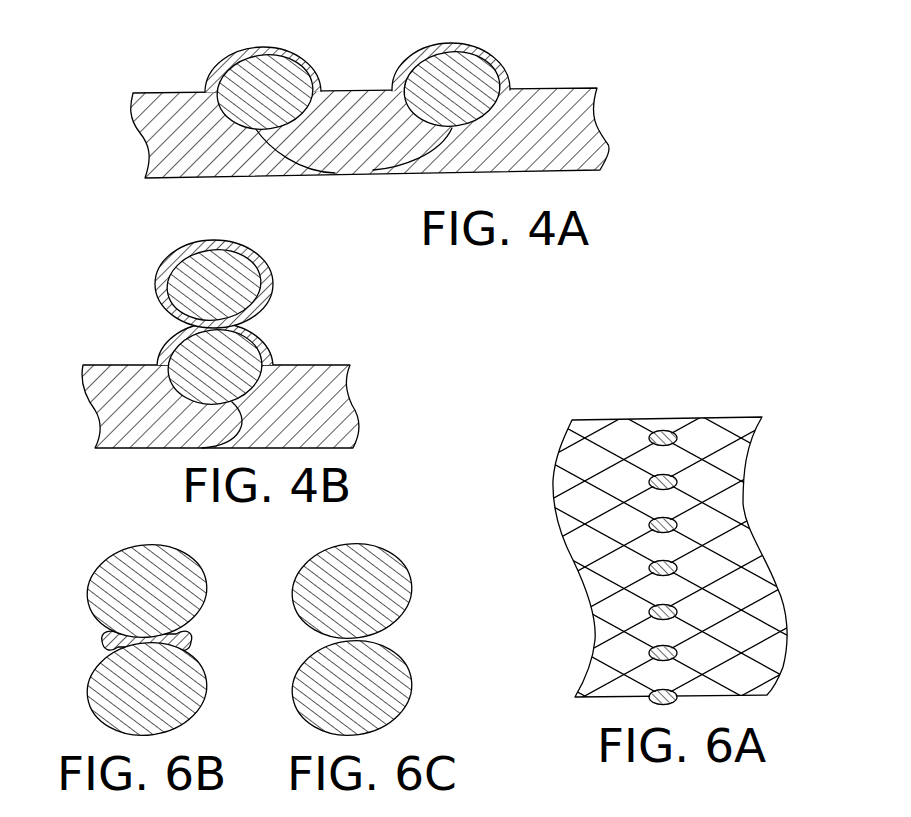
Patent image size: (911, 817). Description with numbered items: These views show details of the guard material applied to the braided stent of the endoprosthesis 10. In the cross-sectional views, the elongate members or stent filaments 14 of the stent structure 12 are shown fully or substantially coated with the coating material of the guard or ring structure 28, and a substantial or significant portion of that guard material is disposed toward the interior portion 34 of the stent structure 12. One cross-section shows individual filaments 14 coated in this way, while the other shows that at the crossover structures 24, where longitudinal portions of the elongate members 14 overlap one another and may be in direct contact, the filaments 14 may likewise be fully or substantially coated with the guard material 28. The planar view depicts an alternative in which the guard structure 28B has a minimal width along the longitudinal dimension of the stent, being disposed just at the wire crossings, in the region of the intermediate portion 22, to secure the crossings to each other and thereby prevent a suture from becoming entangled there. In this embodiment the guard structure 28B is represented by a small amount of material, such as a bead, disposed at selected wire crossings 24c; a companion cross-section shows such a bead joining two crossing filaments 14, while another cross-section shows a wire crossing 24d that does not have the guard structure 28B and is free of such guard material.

In FIG. 6A, the endoprosthesis 10 is at (718, 416).
In FIG. 6A, the stent structure 12 is at (550, 483).
In FIG. 4A, the elongate members 14 is at (232, 84).
In FIG. 4B, the elongate members 14 is at (176, 273).
In FIG. 6B, the elongate members 14 is at (87, 588).
In FIG. 6C, the elongate members 14 is at (412, 583).
In FIG. 6A, the elongate members 14 is at (716, 540).
In FIG. 6A, the intermediate portion 22 is at (587, 596).
In FIG. 4B, the crossover structures 24 is at (284, 328).
In FIG. 6B, the selected wire crossings 24c is at (207, 643).
In FIG. 6A, the selected wire crossings 24c is at (594, 612).
In FIG. 6C, the wire crossing without guard structure 24d is at (418, 640).
In FIG. 6A, the wire crossing without guard structure 24d is at (628, 632).
In FIG. 4A, the guard or ring structure 28 is at (557, 101).
In FIG. 4B, the guard or ring structure 28 is at (313, 373).
In FIG. 6B, the guard structure 28B is at (102, 640).
In FIG. 6A, the guard structure 28B is at (672, 483).
In FIG. 4A, the interior portion 34 is at (375, 171).
In FIG. 4B, the interior portion 34 is at (170, 448).